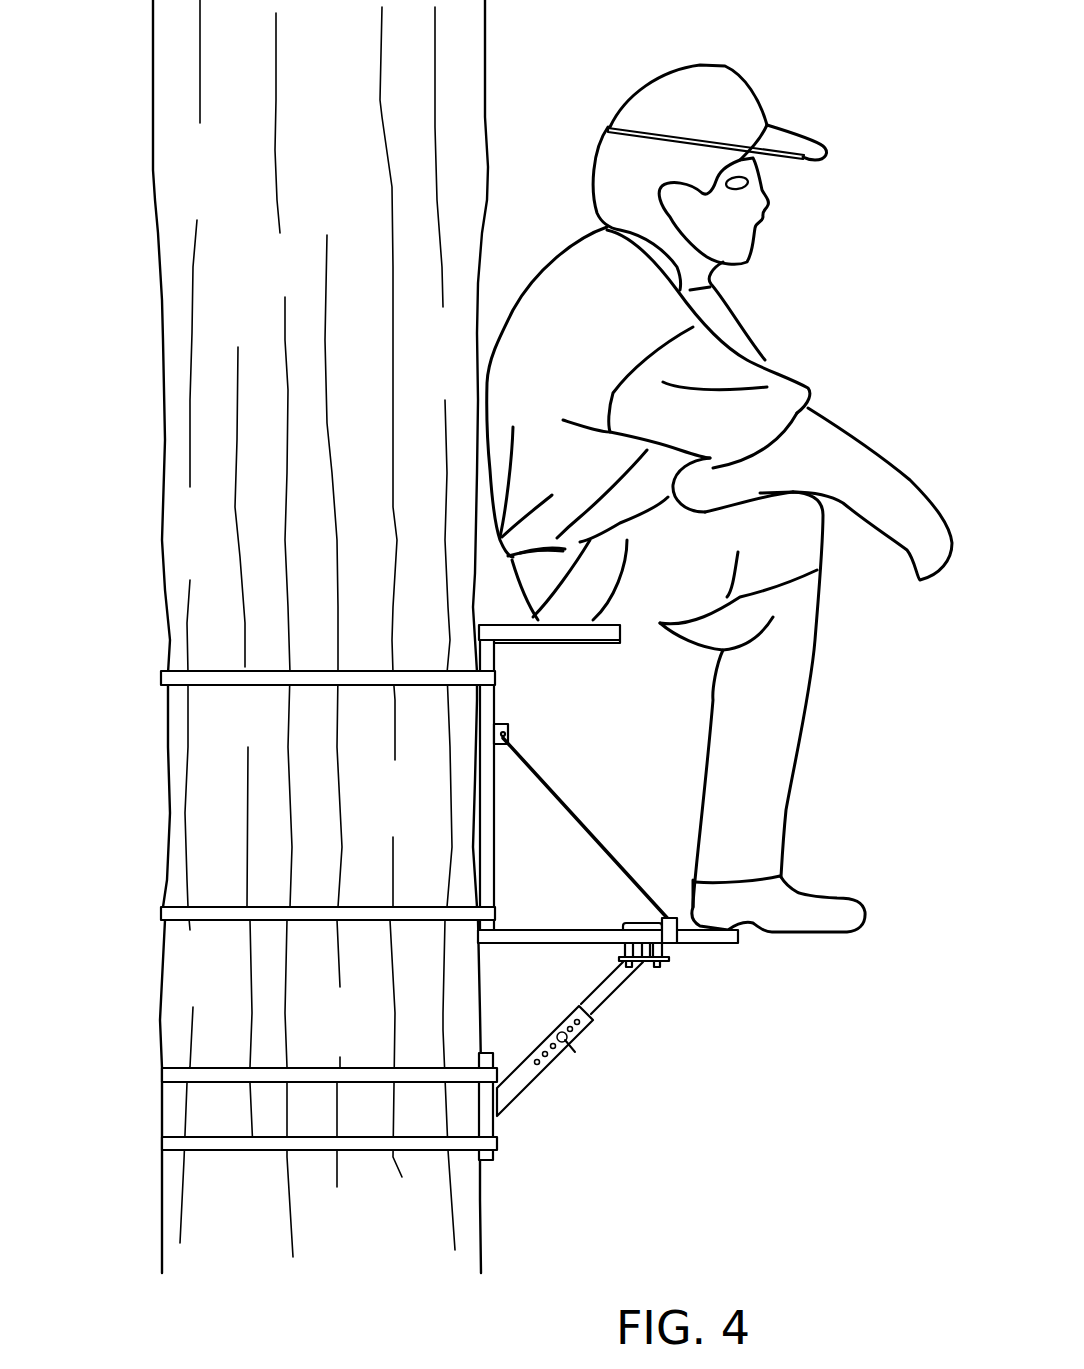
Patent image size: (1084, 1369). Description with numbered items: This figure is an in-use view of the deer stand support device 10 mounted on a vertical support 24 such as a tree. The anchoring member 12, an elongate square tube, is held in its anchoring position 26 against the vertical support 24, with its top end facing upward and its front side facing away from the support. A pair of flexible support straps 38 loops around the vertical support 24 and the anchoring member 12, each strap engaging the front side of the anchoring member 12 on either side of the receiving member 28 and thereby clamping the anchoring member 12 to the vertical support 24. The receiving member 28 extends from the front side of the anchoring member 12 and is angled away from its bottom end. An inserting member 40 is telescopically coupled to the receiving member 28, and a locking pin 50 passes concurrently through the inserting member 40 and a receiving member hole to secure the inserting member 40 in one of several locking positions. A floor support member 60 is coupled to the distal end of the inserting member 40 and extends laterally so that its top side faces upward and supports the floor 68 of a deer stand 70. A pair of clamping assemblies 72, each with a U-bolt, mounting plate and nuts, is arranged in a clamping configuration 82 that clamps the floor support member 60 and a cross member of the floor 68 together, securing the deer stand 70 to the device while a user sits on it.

The deer stand support device 10 is at (451, 935).
The anchoring member 12 is at (487, 1125).
The vertical support 24 is at (211, 538).
The anchoring position 26 is at (505, 1247).
The receiving member 28 is at (525, 1077).
The support straps 38 is at (162, 1072).
The inserting member 40 is at (620, 987).
The locking pin 50 is at (612, 1043).
The floor support member 60 is at (643, 947).
The floor 68 is at (545, 937).
The deer stand 70 is at (425, 802).
The clamping assemblies 72 is at (607, 865).
The clamping configuration 82 is at (725, 918).